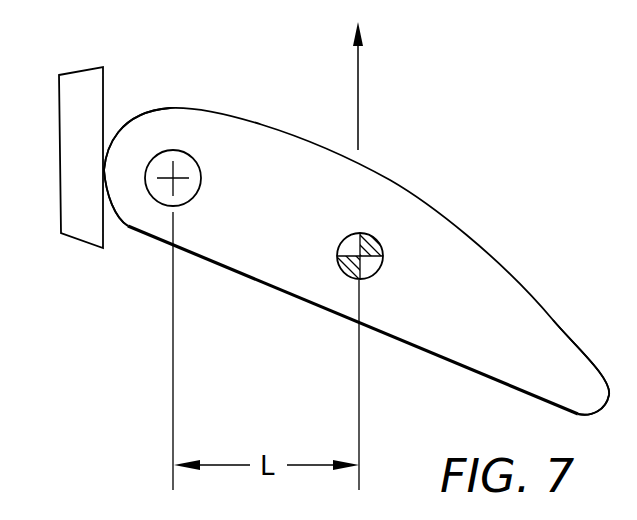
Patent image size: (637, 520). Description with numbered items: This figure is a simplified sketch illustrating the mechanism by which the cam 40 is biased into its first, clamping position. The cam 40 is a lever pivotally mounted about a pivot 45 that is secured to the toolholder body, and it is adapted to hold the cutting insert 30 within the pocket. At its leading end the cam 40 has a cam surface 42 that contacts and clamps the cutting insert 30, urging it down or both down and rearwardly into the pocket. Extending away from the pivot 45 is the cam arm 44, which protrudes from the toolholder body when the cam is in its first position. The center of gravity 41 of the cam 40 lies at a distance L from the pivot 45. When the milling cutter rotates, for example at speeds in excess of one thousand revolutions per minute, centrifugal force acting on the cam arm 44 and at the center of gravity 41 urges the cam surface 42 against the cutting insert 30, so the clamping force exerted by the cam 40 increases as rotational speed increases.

The cutting insert 30 is at (78, 75).
The cam 40 is at (497, 265).
The center of gravity 41 is at (340, 244).
The cam surface 42 is at (122, 120).
The cam arm 44 is at (550, 325).
The pivot 45 is at (187, 168).